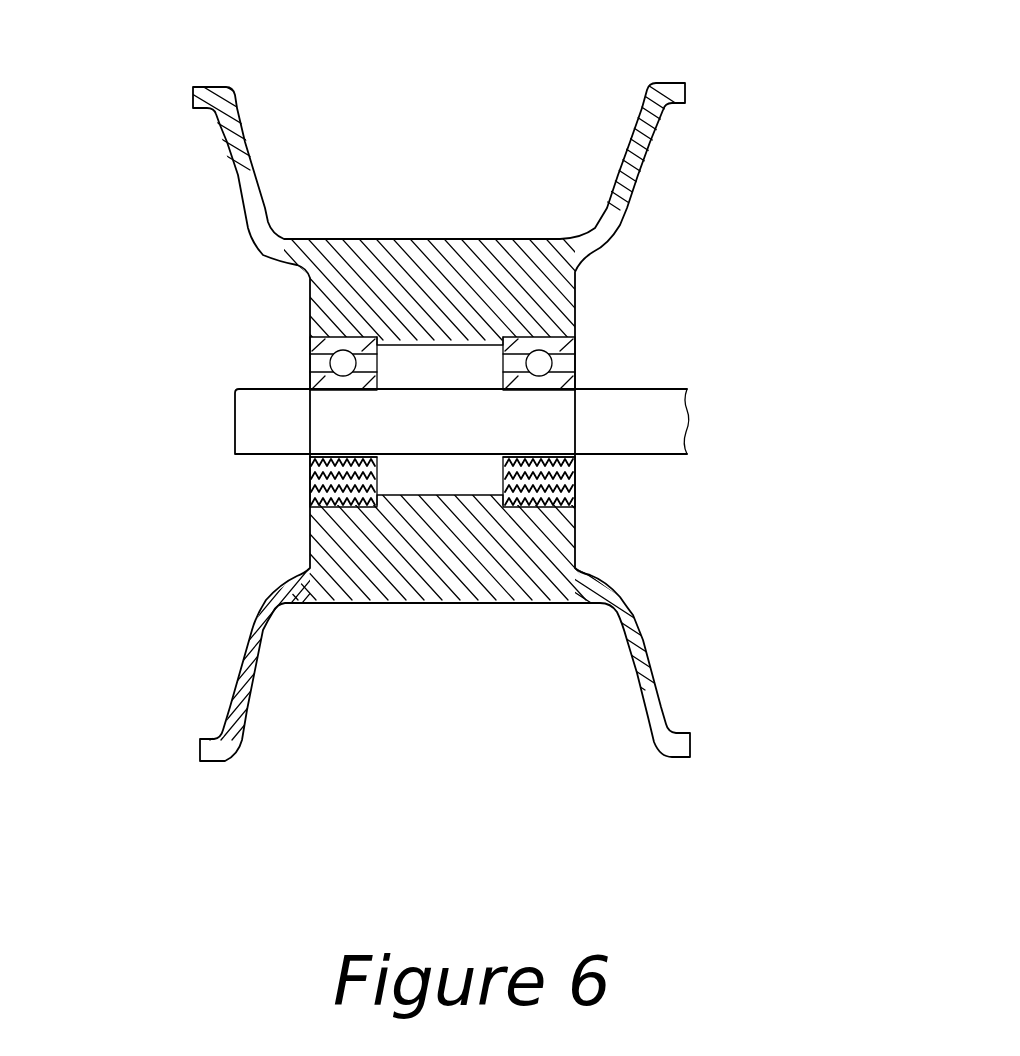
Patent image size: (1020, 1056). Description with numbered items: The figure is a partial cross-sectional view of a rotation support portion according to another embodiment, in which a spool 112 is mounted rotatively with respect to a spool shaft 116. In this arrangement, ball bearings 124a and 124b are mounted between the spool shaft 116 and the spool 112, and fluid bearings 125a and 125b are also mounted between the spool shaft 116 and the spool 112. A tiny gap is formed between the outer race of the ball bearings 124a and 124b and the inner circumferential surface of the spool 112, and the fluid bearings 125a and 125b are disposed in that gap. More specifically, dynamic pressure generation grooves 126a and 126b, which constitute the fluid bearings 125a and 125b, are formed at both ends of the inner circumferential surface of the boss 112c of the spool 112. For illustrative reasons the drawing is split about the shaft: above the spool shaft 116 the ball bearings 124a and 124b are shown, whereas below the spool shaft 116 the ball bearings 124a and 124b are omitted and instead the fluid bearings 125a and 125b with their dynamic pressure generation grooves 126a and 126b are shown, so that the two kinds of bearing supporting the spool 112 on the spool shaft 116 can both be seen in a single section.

The spool 112 is at (430, 233).
The boss 112c is at (445, 299).
The spool shaft 116 is at (583, 422).
The ball bearing 124a is at (575, 318).
The ball bearing 124b is at (310, 338).
The fluid bearing 125a is at (570, 450).
The fluid bearing 125b is at (310, 468).
The dynamic pressure generation groove 126a is at (575, 473).
The dynamic pressure generation groove 126b is at (310, 487).